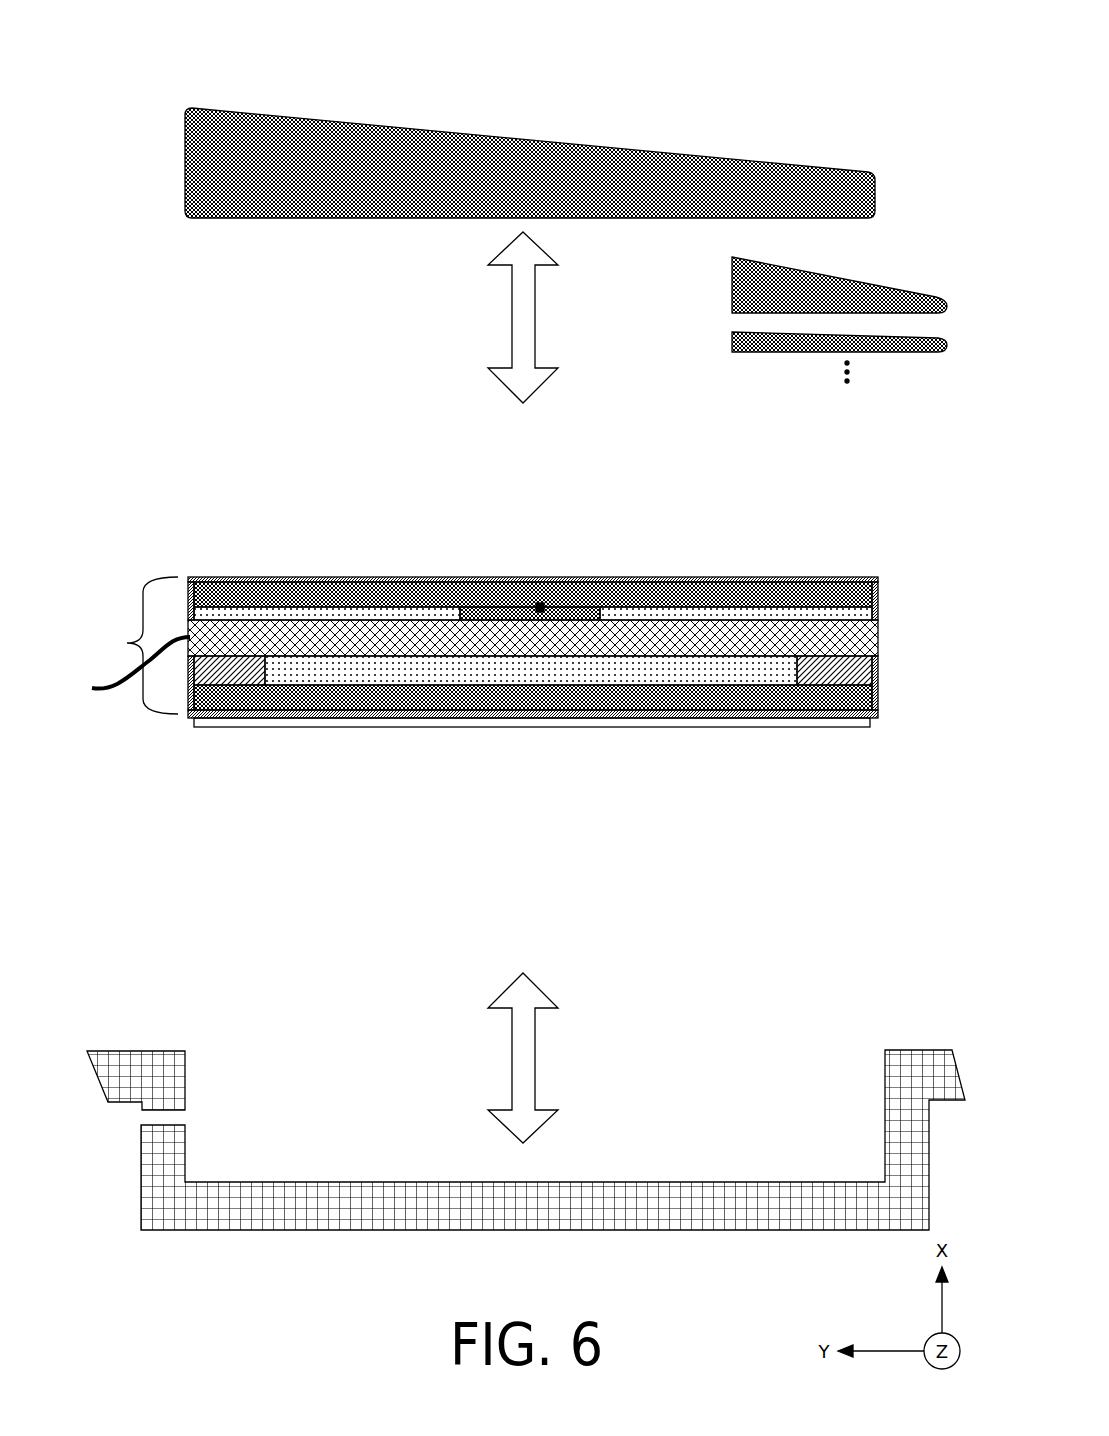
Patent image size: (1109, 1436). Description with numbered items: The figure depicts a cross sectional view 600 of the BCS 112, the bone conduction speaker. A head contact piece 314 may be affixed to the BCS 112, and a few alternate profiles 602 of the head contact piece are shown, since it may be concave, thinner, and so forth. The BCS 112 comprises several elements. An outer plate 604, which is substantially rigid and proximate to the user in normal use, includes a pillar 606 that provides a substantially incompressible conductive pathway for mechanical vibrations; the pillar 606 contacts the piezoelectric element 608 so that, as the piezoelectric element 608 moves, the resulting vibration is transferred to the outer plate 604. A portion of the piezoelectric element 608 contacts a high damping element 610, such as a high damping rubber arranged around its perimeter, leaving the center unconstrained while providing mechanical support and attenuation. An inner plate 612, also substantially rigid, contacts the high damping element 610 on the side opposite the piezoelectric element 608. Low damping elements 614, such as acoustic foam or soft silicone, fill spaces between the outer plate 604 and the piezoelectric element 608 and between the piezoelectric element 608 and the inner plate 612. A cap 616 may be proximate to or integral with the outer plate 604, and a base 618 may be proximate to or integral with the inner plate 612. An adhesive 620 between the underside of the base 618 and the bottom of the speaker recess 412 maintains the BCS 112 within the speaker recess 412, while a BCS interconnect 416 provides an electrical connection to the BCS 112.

The cross sectional view 600 is at (810, 38).
The head contact piece 314 is at (575, 178).
The alternate profiles 602 is at (732, 380).
The outer plate 604 is at (520, 577).
The pillar 606 is at (541, 603).
The piezoelectric element 608 is at (348, 642).
The high damping element 610 is at (223, 678).
The inner plate 612 is at (208, 702).
The low damping element 614 is at (573, 688).
The cap 616 is at (712, 575).
The base 618 is at (380, 718).
The adhesive 620 is at (605, 725).
The BCS 112 is at (127, 643).
The BCS interconnect 416 is at (107, 692).
The speaker recess 412 is at (716, 1165).